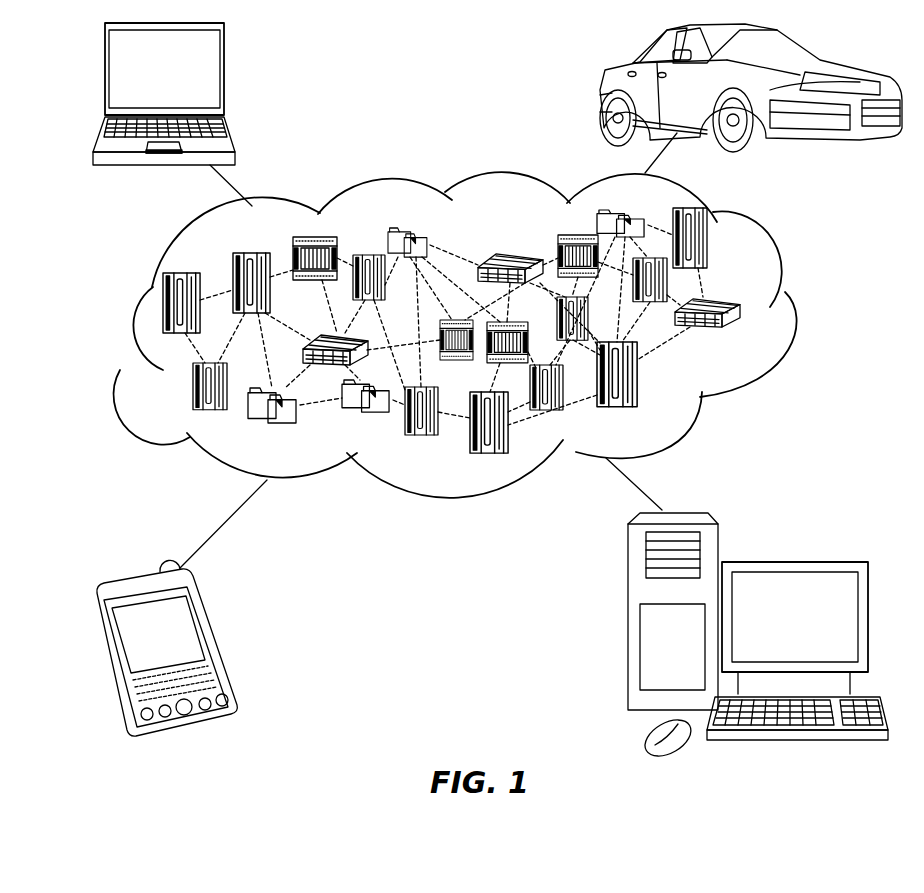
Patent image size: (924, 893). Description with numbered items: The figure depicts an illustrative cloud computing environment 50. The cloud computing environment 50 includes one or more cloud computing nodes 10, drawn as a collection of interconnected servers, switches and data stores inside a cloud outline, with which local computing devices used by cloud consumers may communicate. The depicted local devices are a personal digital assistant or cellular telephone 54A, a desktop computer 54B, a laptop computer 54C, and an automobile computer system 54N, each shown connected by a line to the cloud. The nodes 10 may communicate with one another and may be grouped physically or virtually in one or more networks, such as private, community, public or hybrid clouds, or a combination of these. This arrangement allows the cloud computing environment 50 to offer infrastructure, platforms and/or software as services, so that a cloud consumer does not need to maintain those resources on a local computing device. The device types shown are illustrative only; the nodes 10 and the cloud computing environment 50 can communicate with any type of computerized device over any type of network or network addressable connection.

The cloud computing nodes 10 is at (497, 393).
The cloud computing environment 50 is at (478, 335).
The personal digital assistant or cellular telephone 54A is at (187, 608).
The desktop computer 54B is at (747, 610).
The laptop computer 54C is at (190, 114).
The automobile computer system 54N is at (721, 98).